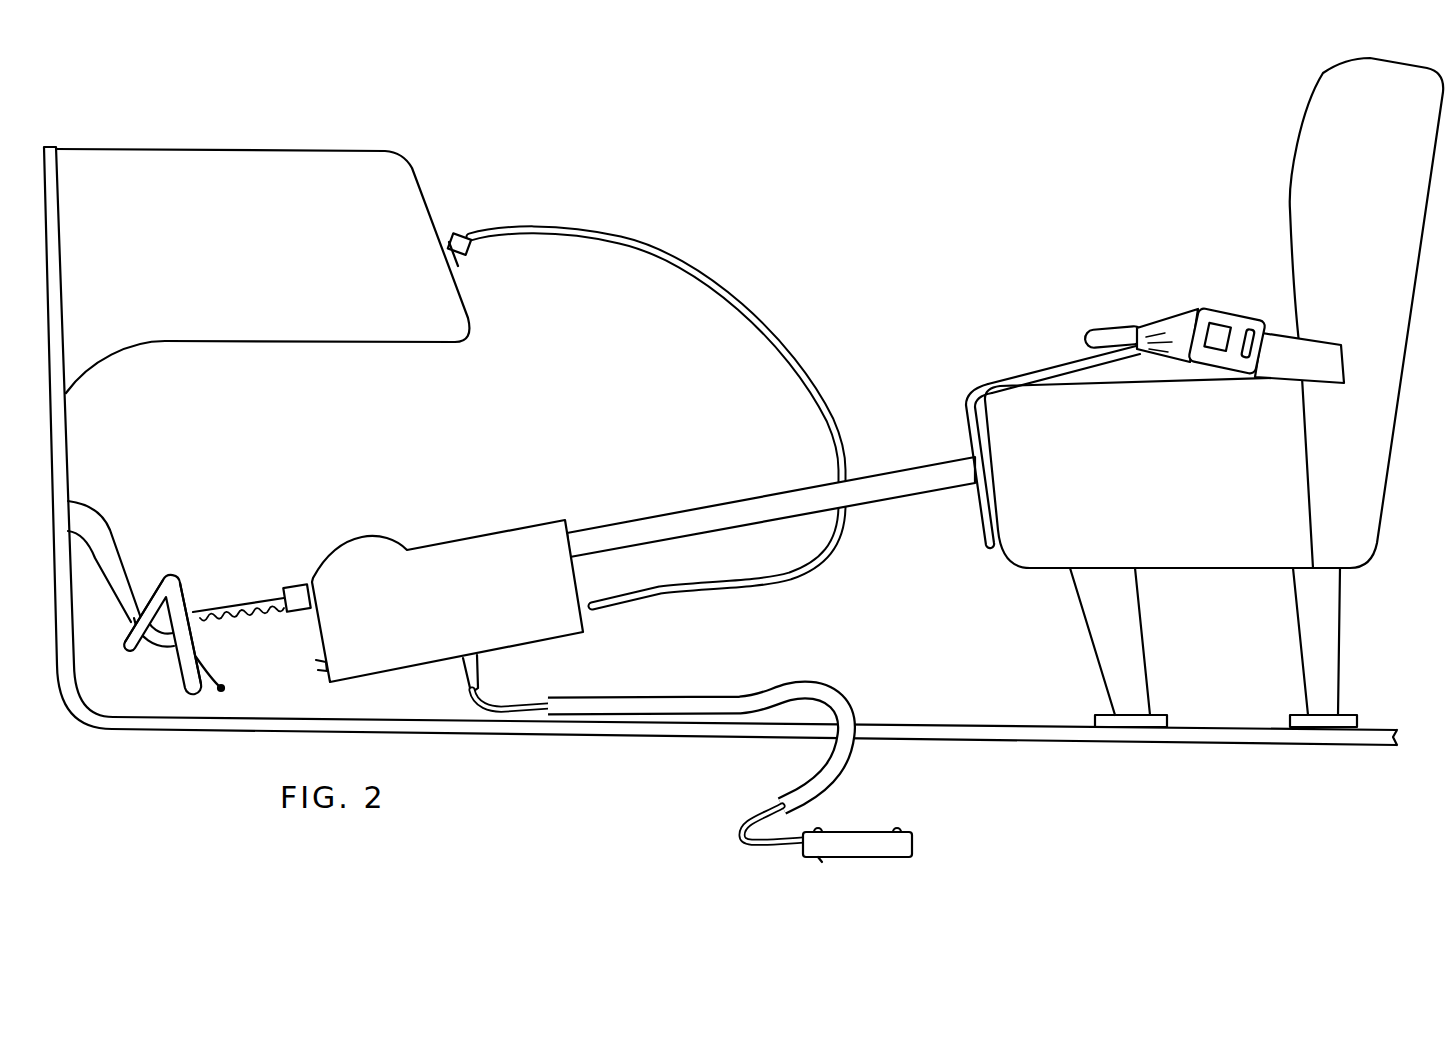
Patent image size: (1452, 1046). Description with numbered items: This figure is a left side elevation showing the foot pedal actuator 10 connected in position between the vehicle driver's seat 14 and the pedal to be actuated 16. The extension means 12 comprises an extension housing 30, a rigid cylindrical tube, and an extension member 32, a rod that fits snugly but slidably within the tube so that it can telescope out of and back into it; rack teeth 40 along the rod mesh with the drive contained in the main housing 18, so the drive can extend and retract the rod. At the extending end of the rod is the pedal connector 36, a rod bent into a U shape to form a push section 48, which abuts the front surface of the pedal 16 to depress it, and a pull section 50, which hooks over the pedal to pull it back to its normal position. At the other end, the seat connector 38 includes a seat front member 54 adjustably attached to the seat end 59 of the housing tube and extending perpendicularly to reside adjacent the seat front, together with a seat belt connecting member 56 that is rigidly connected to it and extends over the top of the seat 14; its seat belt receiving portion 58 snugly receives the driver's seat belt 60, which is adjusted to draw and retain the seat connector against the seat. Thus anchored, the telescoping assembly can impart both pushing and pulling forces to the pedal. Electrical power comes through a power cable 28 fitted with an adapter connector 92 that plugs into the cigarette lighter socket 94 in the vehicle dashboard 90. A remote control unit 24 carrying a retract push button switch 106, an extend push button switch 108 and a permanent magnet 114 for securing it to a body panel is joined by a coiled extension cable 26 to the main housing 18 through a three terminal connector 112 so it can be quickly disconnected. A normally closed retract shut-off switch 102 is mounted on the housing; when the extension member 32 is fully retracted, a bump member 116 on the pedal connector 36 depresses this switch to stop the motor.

The foot pedal actuator 10 is at (783, 197).
The extension means 12 is at (284, 570).
The vehicle driver's seat 14 is at (1060, 547).
The pedal to be actuated 16 is at (178, 683).
The main housing 18 is at (545, 627).
The remote control unit 24 is at (902, 848).
The extension cable 26 is at (828, 683).
The power cable 28 is at (672, 280).
The extension housing 30 is at (296, 585).
The extension member 32 is at (243, 602).
The pedal connector 36 is at (195, 548).
The seat connector 38 is at (923, 340).
The rack teeth 40 is at (232, 616).
The push section 48 is at (190, 603).
The pull section 50 is at (148, 582).
The seat front member 54 is at (983, 513).
The seat belt connecting member 56 is at (1050, 363).
The seat belt receiving portion 58 is at (1110, 330).
The seat end 59 is at (953, 445).
The seat belt 60 is at (1180, 325).
The vehicle dashboard 90 is at (296, 150).
The adapter connector 92 is at (459, 232).
The cigarette lighter socket 94 is at (460, 258).
The retract shut-off switch 102 is at (321, 673).
The retract push button switch 106 is at (821, 826).
The extend push button switch 108 is at (900, 826).
The three terminal connector 112 is at (485, 670).
The permanent magnet 114 is at (820, 860).
The bump member 116 is at (226, 689).